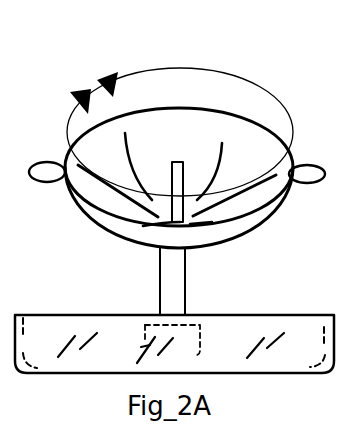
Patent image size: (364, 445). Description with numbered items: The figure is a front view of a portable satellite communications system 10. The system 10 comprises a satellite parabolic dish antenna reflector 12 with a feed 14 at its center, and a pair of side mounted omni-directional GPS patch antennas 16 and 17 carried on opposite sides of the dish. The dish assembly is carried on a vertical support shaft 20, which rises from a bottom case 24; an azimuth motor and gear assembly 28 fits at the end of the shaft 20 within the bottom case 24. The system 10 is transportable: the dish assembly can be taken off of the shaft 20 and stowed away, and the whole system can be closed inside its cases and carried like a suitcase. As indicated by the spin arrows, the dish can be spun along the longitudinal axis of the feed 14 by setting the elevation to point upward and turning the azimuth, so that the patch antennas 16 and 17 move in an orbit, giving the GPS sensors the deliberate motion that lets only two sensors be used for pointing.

The satellite communications system 10 is at (118, 49).
The satellite parabolic dish antenna reflector 12 is at (247, 117).
The feed 14 is at (178, 161).
The omni-directional GPS patch antenna 16 is at (43, 162).
The omni-directional GPS patch antenna 17 is at (312, 165).
The vertical support shaft 20 is at (158, 281).
The bottom case 24 is at (317, 314).
The azimuth motor and gear assembly 28 is at (197, 346).